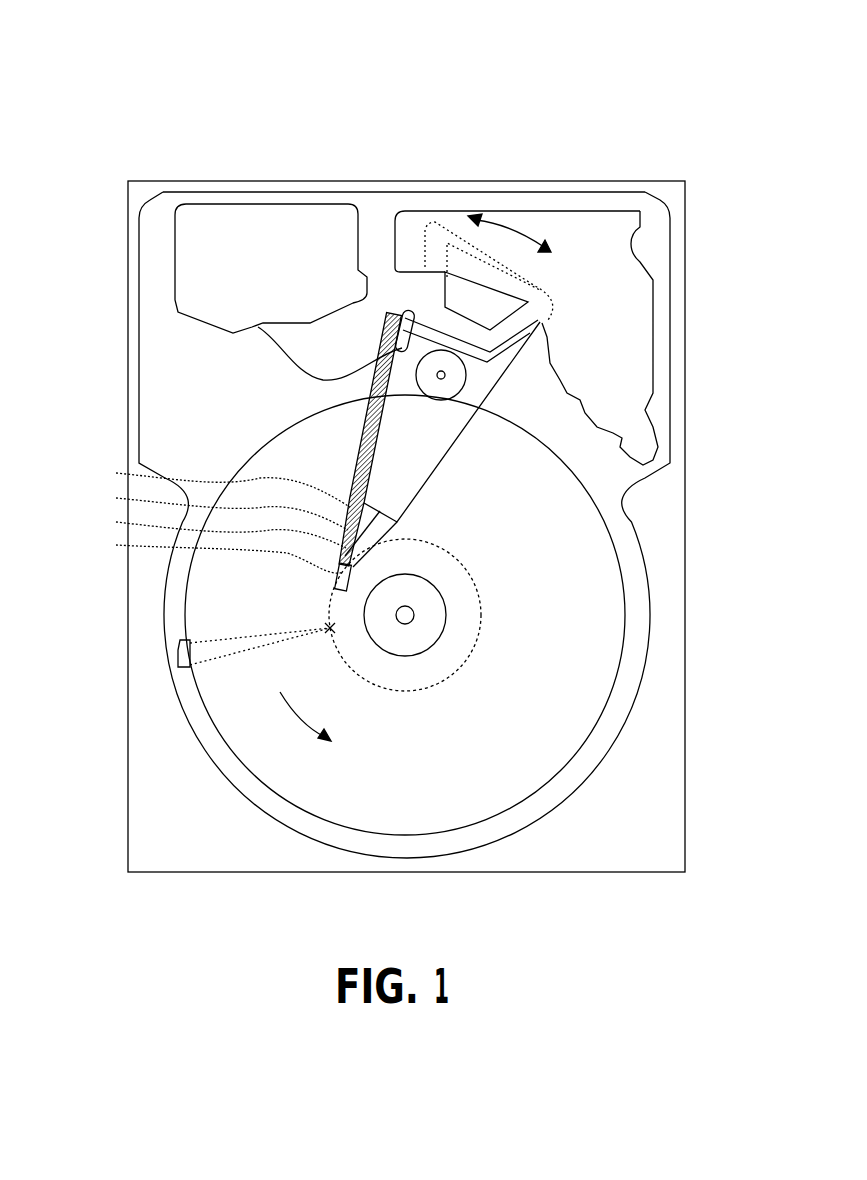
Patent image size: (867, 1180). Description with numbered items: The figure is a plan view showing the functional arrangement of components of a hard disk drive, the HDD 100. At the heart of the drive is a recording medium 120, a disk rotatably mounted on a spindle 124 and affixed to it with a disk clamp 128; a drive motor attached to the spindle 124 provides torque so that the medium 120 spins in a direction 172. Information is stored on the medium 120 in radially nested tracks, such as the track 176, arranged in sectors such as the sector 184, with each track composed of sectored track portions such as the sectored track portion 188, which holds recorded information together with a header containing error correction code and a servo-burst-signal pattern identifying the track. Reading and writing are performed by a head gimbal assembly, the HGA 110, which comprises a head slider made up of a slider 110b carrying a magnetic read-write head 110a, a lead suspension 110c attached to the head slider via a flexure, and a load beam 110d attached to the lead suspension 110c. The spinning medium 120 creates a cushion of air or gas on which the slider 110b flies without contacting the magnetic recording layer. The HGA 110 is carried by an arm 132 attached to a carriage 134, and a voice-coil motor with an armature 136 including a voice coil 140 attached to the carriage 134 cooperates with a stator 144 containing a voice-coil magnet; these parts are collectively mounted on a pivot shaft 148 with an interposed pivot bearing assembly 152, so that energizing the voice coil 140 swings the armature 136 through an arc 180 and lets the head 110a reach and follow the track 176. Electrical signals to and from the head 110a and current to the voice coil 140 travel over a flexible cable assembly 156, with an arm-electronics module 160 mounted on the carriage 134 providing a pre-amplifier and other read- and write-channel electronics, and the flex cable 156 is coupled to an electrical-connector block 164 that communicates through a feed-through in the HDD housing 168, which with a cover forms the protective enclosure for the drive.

The hard disk drive 100 is at (62, 70).
The head gimbal assembly 110 is at (68, 450).
The magnetic read-write head 110a is at (205, 553).
The slider 110b is at (207, 528).
The lead suspension 110c is at (208, 506).
The load beam 110d is at (209, 481).
The recording medium 120 is at (567, 570).
The spindle 124 is at (415, 613).
The disk clamp 128 is at (430, 630).
The arm 132 is at (400, 473).
The carriage 134 is at (457, 405).
The armature 136 is at (412, 262).
The voice coil 140 is at (440, 265).
The stator 144 is at (627, 288).
The pivot shaft 148 is at (448, 375).
The pivot bearing assembly 152 is at (453, 387).
The flexible cable assembly 156 is at (280, 352).
The arm-electronics module 160 is at (400, 350).
The electrical-connector block 164 is at (195, 268).
The HDD housing 168 is at (668, 188).
The direction 172 is at (308, 722).
The track 176 is at (472, 586).
The arc 180 is at (502, 226).
The sector 184 is at (178, 650).
The sectored track portion 188 is at (330, 628).